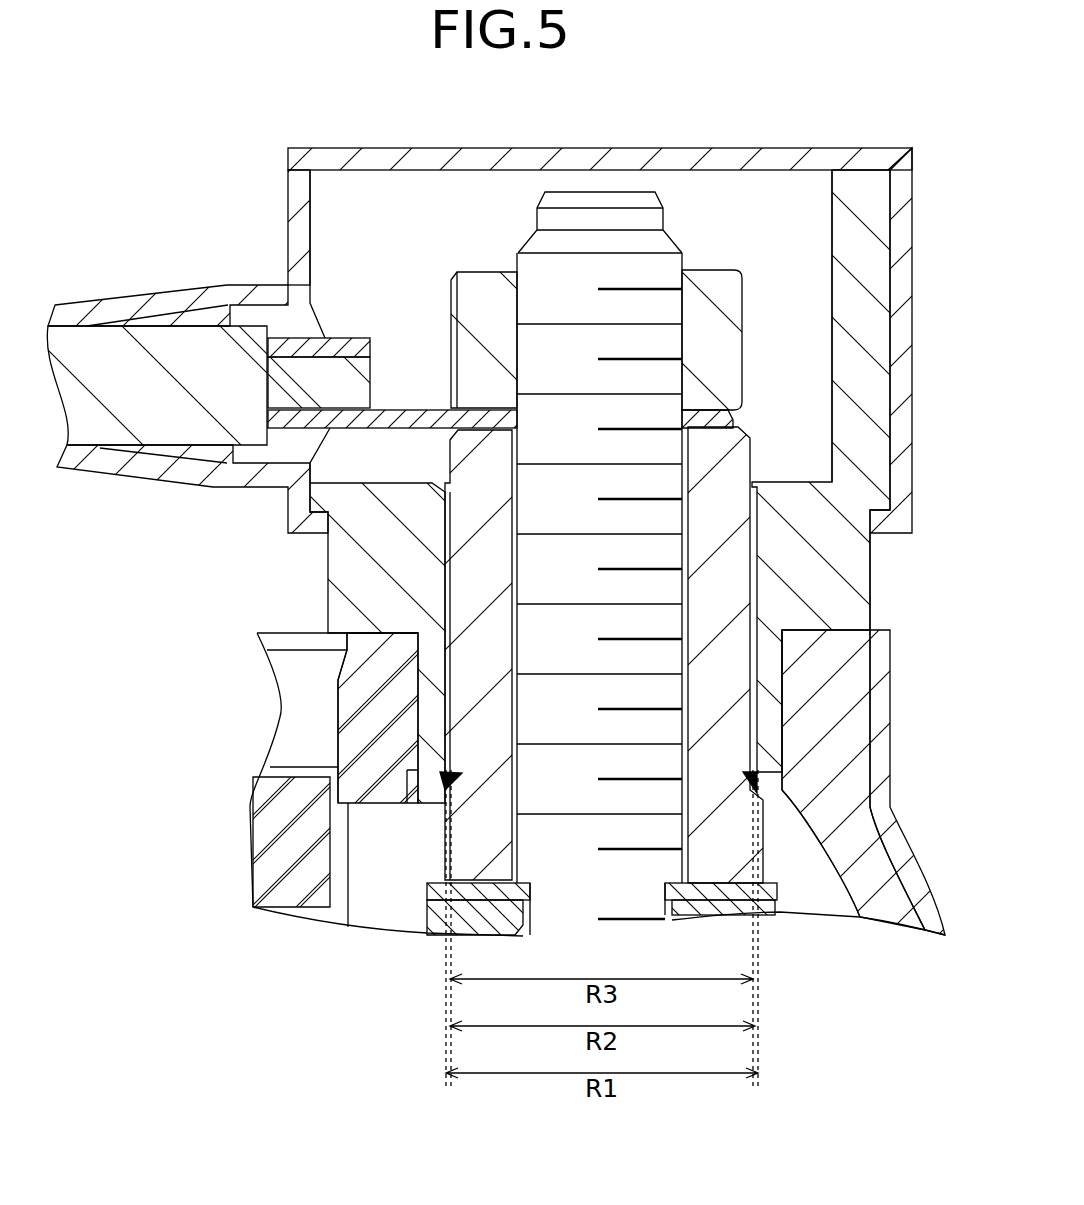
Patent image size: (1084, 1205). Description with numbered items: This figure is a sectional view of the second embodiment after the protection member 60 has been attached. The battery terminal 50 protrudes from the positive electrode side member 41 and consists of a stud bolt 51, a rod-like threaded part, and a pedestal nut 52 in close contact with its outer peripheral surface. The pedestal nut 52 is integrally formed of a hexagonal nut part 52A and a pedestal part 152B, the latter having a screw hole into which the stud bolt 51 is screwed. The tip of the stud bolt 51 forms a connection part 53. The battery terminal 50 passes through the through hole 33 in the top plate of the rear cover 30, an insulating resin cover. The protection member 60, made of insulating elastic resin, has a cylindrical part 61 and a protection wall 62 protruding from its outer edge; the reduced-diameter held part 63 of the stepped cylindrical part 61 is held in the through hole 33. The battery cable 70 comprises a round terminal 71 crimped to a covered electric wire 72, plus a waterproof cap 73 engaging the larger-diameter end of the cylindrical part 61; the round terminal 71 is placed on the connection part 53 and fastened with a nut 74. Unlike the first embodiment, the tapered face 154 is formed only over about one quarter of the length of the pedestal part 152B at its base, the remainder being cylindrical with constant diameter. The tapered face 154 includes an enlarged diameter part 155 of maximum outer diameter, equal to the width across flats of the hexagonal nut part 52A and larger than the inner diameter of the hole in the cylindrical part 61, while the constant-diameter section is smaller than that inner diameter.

The rear cover 30 is at (900, 823).
The through hole 33 is at (773, 632).
The positive electrode side member 41 is at (437, 903).
The battery terminal 50 is at (542, 602).
The stud bolt 51 is at (517, 565).
The pedestal nut 52 is at (542, 602).
The hexagonal nut part 52A is at (440, 820).
The pedestal part 152B is at (447, 610).
The connection part 53 is at (683, 307).
The protection member 60 is at (542, 602).
The cylindrical part 61 is at (870, 556).
The protection wall 62 is at (900, 372).
The held part 63 is at (785, 663).
The battery cable 70 is at (542, 602).
The round terminal 71 is at (408, 410).
The covered electric wire 72 is at (174, 318).
The waterproof cap 73 is at (425, 147).
The nut 74 is at (717, 288).
The tapered face 154 is at (753, 720).
The enlarged diameter part 155 is at (757, 753).